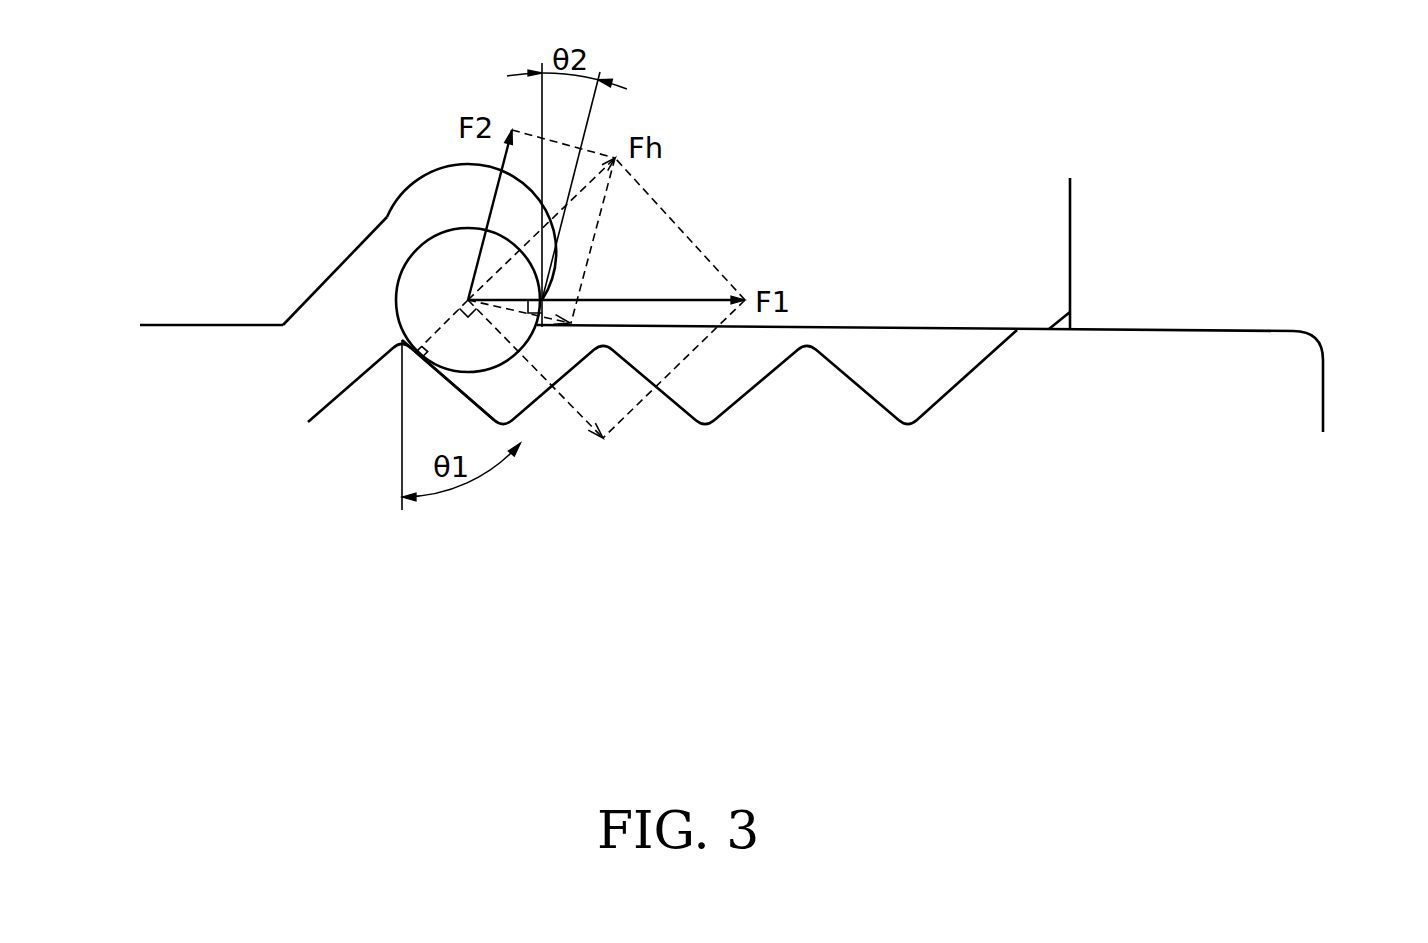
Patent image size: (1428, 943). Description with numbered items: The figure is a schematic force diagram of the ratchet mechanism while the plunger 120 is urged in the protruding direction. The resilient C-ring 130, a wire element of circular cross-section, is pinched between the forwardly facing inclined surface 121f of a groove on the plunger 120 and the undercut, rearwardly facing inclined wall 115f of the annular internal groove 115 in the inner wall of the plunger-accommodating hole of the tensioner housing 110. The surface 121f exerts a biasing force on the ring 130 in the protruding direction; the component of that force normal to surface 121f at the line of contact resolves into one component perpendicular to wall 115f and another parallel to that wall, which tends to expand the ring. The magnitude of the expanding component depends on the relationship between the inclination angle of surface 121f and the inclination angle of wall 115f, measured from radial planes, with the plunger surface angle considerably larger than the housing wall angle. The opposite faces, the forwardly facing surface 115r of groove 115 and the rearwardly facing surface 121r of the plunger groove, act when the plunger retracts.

The tensioner housing 110 is at (1042, 261).
The annular groove 115 is at (444, 199).
The forwardly facing inclined surface 115r is at (336, 271).
The rearwardly facing inclined wall 115f is at (542, 292).
The plunger 120 is at (815, 430).
The rearwardly facing inclined surface 121r is at (330, 402).
The forwardly facing inclined surface 121f is at (480, 407).
The C-ring 130 is at (432, 275).